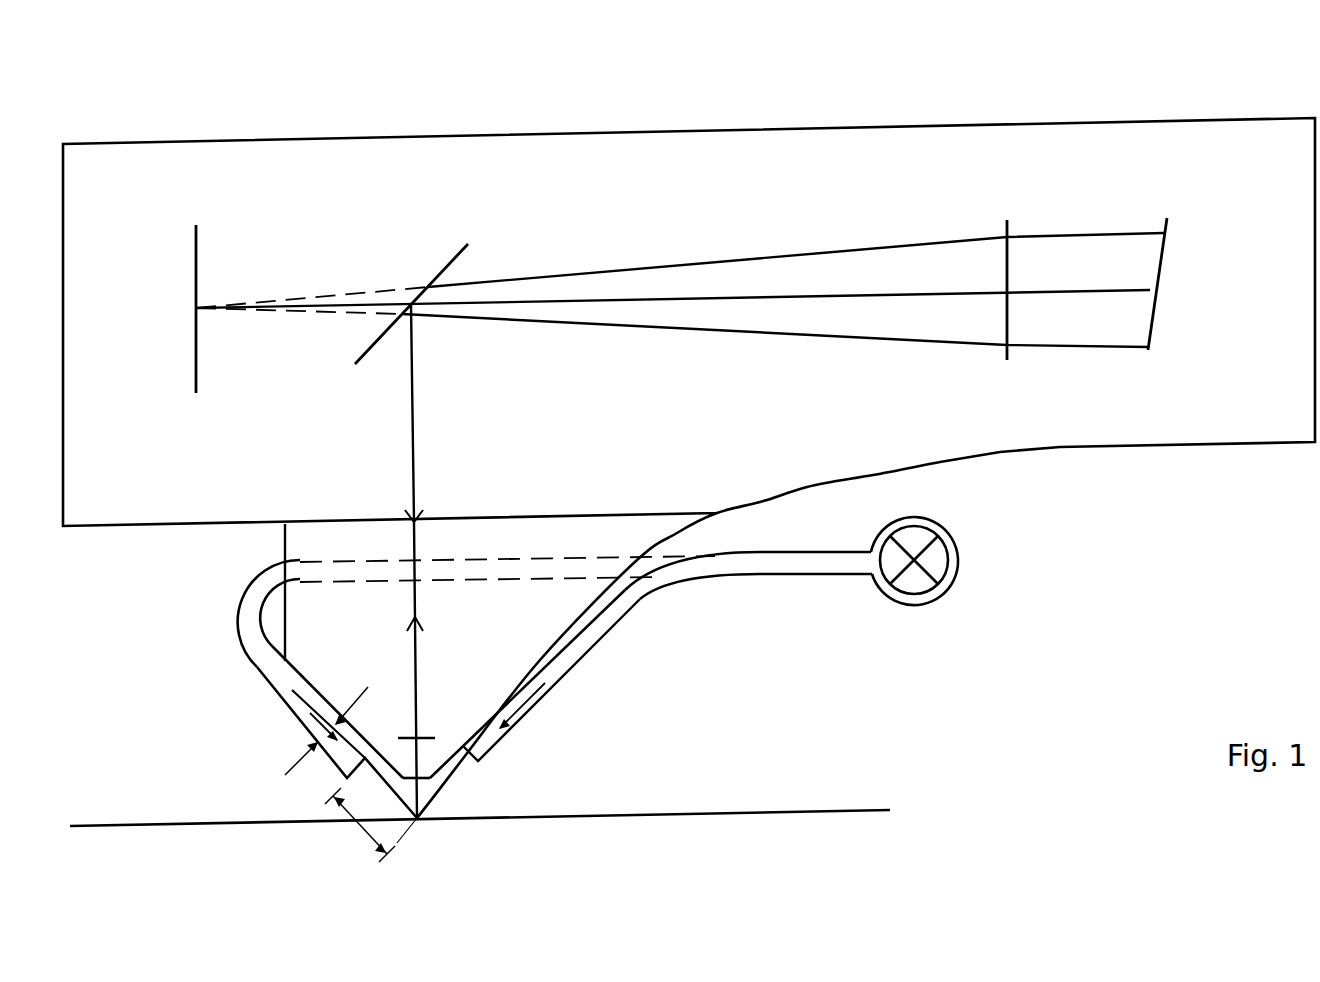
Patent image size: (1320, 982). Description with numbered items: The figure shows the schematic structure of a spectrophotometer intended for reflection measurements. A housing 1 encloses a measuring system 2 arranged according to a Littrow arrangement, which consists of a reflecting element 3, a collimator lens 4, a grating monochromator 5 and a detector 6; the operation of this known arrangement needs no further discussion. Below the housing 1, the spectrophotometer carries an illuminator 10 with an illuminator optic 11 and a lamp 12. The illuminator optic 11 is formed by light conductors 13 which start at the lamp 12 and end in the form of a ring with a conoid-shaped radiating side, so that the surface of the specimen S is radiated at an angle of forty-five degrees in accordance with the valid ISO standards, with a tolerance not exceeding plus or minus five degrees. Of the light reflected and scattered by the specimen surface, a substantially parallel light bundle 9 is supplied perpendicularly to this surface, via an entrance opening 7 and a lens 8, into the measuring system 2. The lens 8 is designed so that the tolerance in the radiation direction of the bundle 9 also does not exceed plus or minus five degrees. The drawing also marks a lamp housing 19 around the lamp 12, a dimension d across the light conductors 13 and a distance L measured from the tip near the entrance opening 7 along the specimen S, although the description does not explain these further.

The housing 1 is at (912, 125).
The measuring system 2 is at (493, 399).
The reflecting element 3 is at (445, 268).
The collimator lens 4 is at (1005, 223).
The grating monochromator 5 is at (1162, 262).
The detector 6 is at (196, 376).
The entrance opening 7 is at (425, 780).
The lens 8 is at (428, 737).
The bundle 9 is at (418, 652).
The illuminator 10 is at (585, 700).
The illuminator optic 11 is at (250, 673).
The lamp 12 is at (936, 557).
The light conductors 13 is at (250, 630).
The lamp housing 19 is at (930, 602).
The specimen S is at (767, 808).
The light guide diameter d is at (322, 737).
The distance from tip L is at (371, 825).